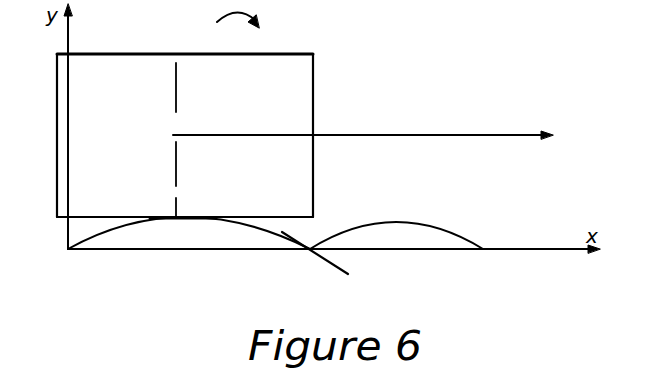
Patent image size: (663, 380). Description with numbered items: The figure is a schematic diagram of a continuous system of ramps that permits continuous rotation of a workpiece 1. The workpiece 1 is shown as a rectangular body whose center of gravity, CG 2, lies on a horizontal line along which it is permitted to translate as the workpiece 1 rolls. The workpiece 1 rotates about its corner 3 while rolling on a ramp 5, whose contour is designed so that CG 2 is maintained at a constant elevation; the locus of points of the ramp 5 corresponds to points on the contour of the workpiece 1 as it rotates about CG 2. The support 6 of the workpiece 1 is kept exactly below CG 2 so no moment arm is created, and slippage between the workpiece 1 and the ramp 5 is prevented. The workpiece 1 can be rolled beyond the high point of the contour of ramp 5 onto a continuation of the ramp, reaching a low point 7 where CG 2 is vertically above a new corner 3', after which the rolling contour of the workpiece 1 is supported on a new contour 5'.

The workpiece 1 is at (314, 89).
The CG 2 is at (173, 137).
The corner 3 is at (52, 236).
The new corner 3' is at (343, 191).
The ramp 5 is at (189, 233).
The new contour 5' is at (405, 232).
The support 6 is at (181, 214).
The low point 7 is at (350, 273).